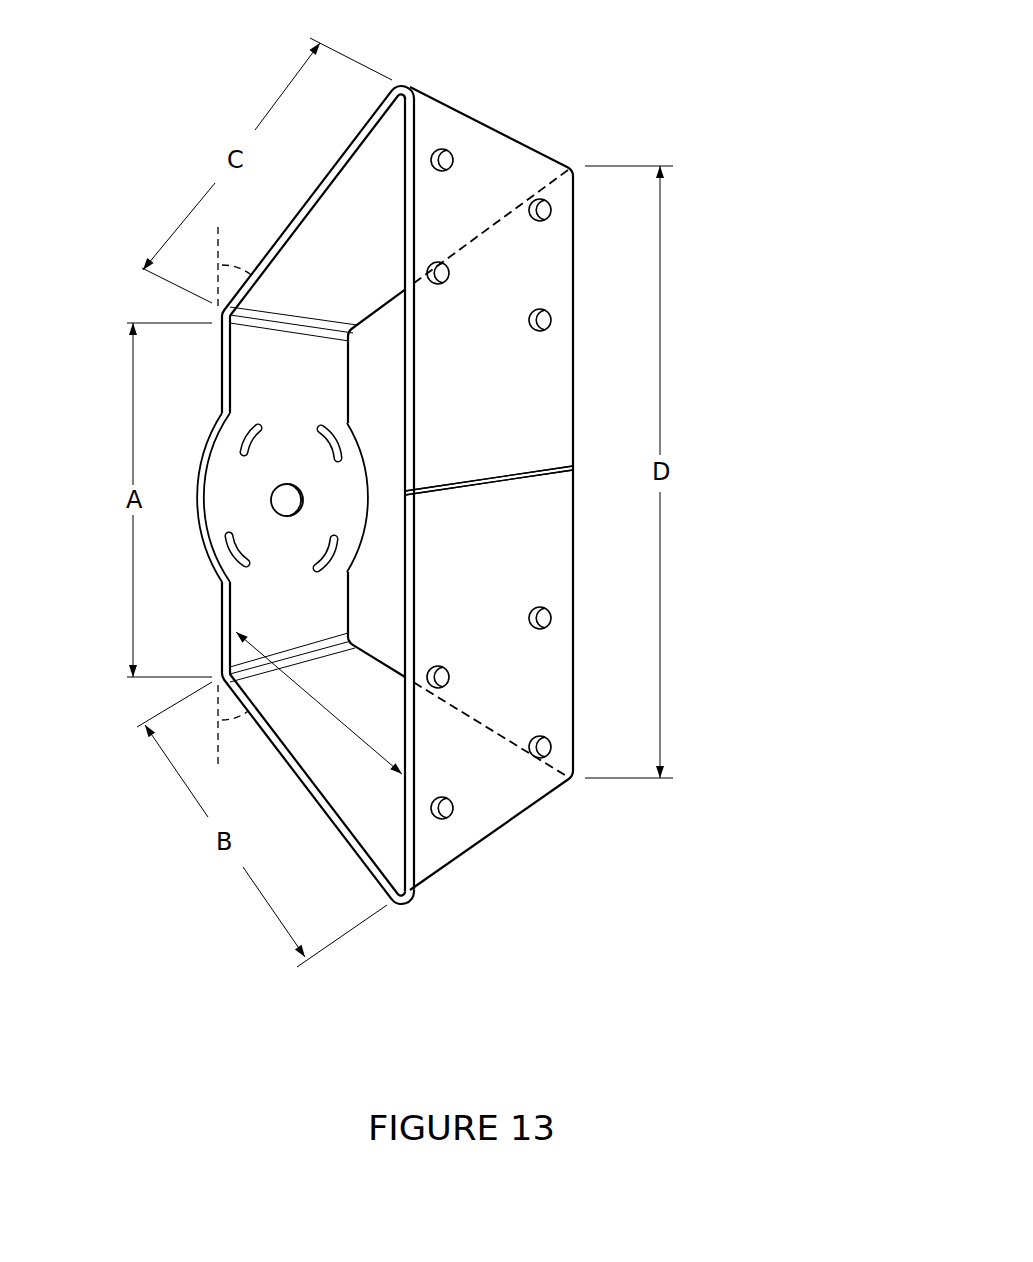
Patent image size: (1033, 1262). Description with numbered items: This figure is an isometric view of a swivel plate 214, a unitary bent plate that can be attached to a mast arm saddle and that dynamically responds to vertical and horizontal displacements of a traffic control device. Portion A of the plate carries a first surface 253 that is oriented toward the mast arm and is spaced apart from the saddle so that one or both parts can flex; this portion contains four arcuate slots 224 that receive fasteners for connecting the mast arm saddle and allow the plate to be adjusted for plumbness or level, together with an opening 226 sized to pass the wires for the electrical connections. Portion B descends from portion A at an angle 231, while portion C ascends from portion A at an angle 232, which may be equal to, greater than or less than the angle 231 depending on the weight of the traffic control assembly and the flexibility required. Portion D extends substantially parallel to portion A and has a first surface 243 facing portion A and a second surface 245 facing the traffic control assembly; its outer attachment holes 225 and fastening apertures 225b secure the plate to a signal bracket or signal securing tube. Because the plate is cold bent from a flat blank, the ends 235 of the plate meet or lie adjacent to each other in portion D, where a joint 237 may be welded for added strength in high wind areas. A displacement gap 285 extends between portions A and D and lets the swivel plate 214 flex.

The swivel plate 214 is at (742, 180).
The arcuate slots 224 is at (243, 432).
The outer attachment holes 225 is at (448, 820).
The fastening apertures 225b is at (438, 273).
The opening 226 is at (283, 502).
The angle 231 is at (232, 703).
The angle 232 is at (227, 280).
The ends 235 is at (542, 477).
The joint 237 is at (570, 468).
The first surface 243 is at (405, 118).
The second surface 245 is at (427, 120).
The first surface 253 is at (277, 377).
The displacement gap 285 is at (305, 690).